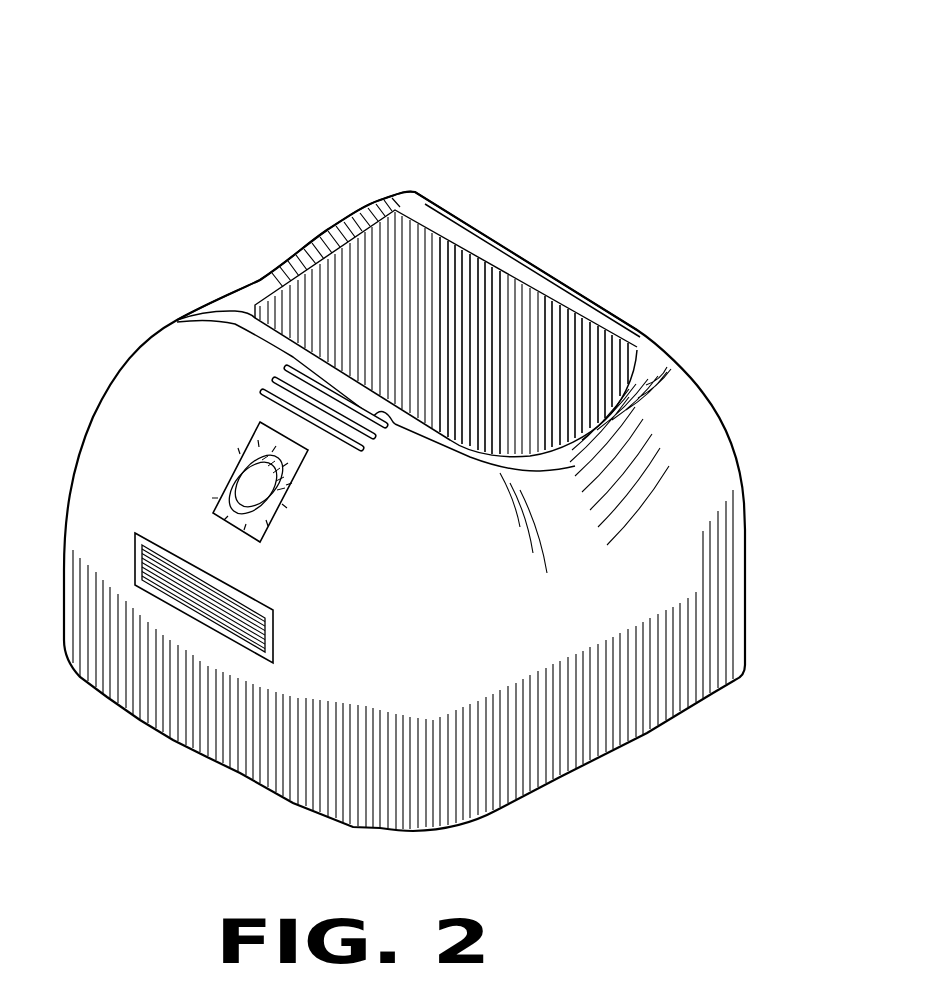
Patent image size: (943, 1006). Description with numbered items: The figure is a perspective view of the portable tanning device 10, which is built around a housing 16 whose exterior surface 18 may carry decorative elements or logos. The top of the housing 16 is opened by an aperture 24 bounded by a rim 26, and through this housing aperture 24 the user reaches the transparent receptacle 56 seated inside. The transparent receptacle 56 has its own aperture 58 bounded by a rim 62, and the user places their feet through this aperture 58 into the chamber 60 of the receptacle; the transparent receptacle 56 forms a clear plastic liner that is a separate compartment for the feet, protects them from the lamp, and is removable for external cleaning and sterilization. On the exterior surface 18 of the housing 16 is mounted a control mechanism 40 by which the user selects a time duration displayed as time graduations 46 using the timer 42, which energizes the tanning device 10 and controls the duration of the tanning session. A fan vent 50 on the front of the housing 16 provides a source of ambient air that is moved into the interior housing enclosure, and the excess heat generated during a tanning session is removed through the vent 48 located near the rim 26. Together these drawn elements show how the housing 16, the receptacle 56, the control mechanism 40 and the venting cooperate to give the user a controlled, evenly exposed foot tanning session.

The portable tanning device 10 is at (258, 145).
The housing 16 is at (207, 293).
The exterior surface 18 is at (178, 350).
The aperture 24 is at (582, 373).
The rim 26 is at (558, 290).
The control mechanism 40 is at (220, 473).
The timer 42 is at (250, 500).
The time graduations 46 is at (262, 438).
The vent 48 is at (393, 422).
The fan vent 50 is at (178, 588).
The transparent receptacle 56 is at (508, 268).
The aperture 58 is at (507, 400).
The chamber 60 is at (477, 273).
The rim 62 is at (440, 228).